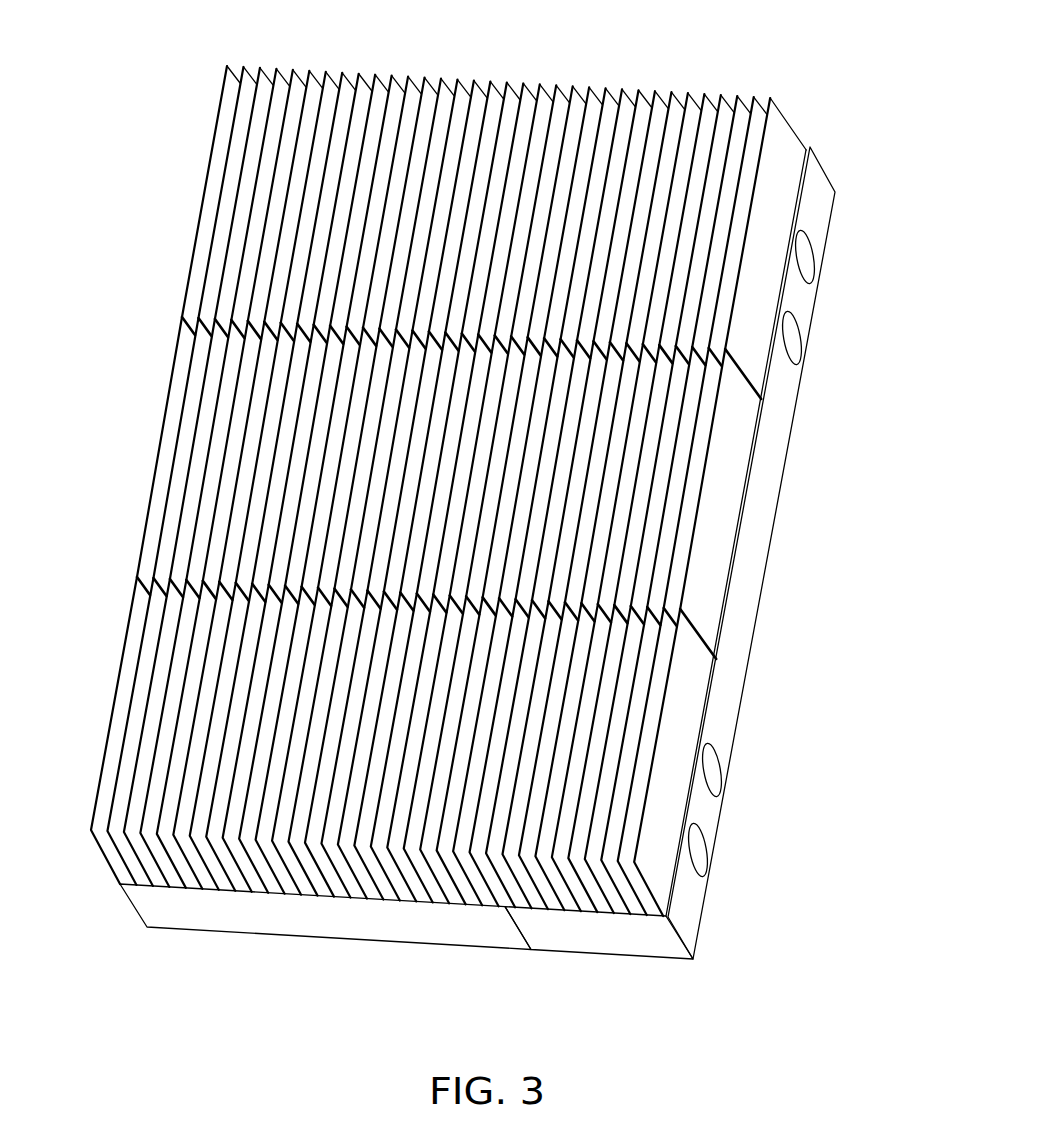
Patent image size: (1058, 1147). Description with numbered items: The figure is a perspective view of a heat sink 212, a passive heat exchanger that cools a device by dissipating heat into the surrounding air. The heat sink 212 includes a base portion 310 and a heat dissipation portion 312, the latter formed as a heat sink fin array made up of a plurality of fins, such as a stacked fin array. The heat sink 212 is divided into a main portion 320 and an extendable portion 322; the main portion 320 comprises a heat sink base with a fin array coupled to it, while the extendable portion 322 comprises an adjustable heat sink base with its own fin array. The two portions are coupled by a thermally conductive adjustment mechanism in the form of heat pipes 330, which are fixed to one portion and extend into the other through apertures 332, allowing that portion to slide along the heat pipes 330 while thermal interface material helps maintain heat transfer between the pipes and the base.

The heat sink 212 is at (749, 75).
The heat dissipation portion 312 is at (840, 124).
The heat pipes 330 is at (814, 262).
The apertures 332 is at (718, 772).
The base portion 310 is at (406, 963).
The main portion 320 is at (318, 962).
The extendable portion 322 is at (631, 984).